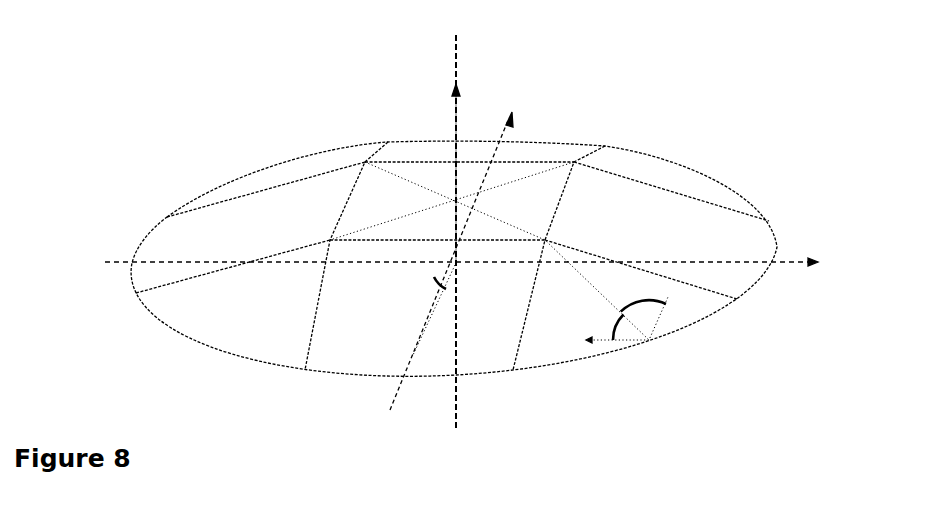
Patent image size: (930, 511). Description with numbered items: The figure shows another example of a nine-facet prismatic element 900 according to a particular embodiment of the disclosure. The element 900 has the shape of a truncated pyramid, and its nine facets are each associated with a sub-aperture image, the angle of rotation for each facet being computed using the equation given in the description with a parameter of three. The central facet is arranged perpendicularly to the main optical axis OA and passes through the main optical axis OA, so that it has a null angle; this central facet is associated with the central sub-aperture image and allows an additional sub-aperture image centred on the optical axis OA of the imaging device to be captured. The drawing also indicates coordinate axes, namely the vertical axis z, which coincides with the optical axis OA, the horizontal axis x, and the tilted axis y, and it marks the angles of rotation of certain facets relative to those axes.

The segmented optical element (lens array) 900 is at (194, 123).
The main optical axis OA is at (458, 62).
The z axis z is at (446, 173).
The x axis x is at (461, 252).
The y' axis y is at (462, 259).